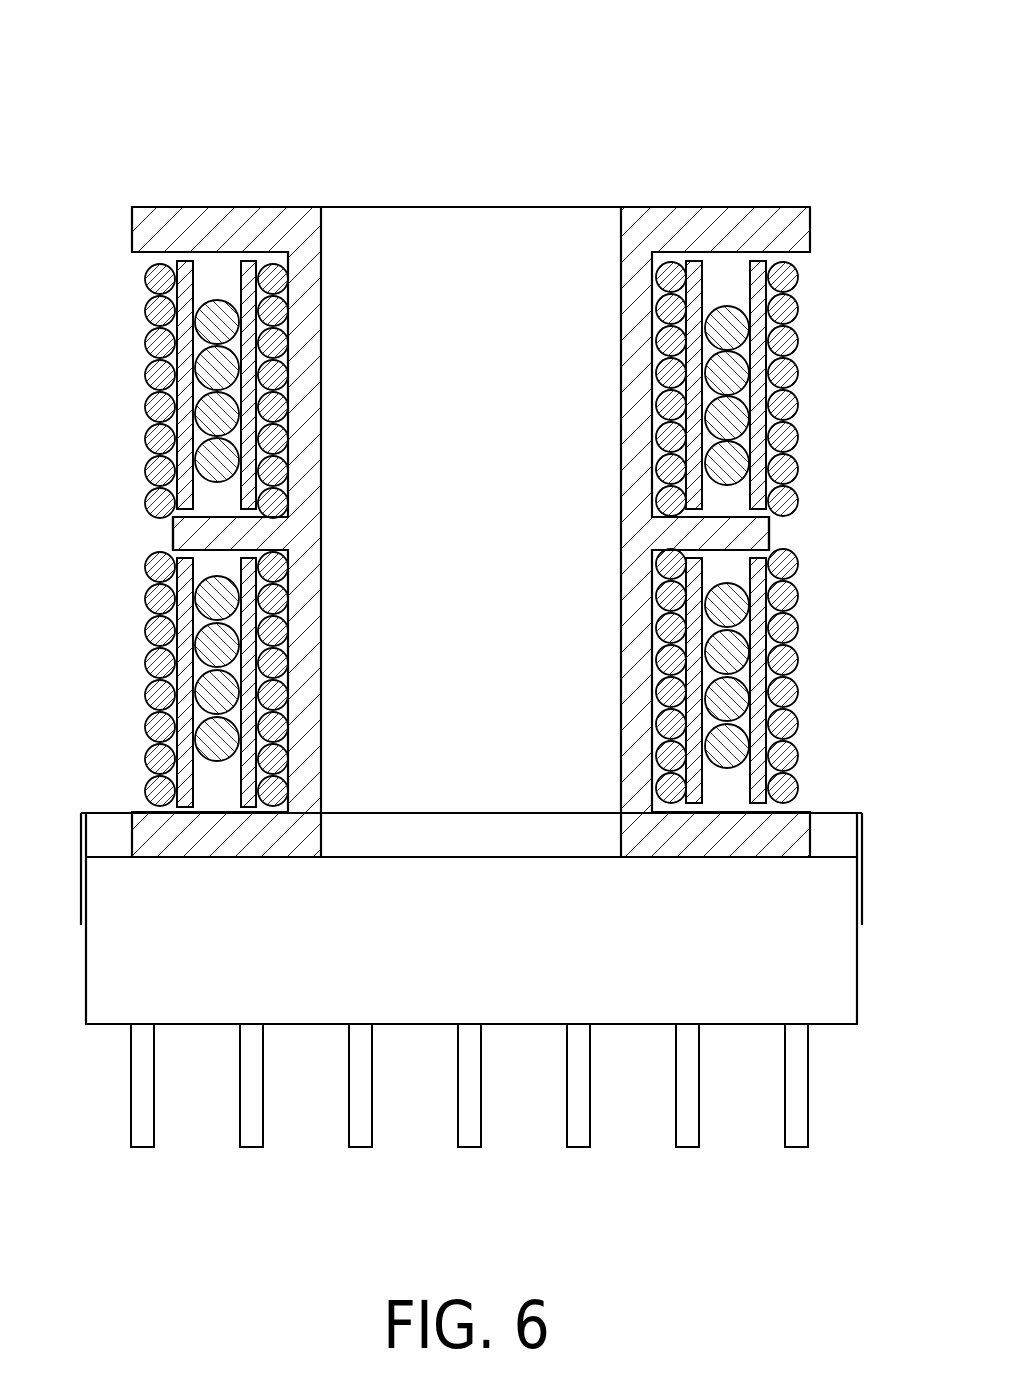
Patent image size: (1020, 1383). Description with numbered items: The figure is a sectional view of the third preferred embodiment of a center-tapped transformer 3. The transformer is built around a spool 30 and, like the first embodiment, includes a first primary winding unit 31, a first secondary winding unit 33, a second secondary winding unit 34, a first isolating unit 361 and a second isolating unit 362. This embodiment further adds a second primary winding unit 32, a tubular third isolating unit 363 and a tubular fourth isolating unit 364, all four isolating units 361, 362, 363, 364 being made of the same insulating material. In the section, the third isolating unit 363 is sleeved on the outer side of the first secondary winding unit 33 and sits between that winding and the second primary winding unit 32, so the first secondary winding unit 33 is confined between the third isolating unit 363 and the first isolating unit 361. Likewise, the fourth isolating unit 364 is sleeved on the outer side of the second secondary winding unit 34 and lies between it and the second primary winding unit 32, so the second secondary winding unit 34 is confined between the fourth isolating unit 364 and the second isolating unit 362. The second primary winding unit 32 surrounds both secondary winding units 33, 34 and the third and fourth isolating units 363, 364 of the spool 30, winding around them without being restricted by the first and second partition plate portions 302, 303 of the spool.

The center-tapped transformer 3 is at (481, 578).
The spool 30 is at (222, 222).
The first primary winding unit 31 is at (273, 278).
The second primary winding unit 32 is at (162, 310).
The first secondary winding unit 33 is at (213, 420).
The second secondary winding unit 34 is at (217, 677).
The first partition plate portion 302 is at (183, 533).
The second partition plate portion 303 is at (762, 537).
The first isolating unit 361 is at (250, 270).
The second isolating unit 362 is at (250, 805).
The third isolating unit 363 is at (187, 272).
The fourth isolating unit 364 is at (185, 805).